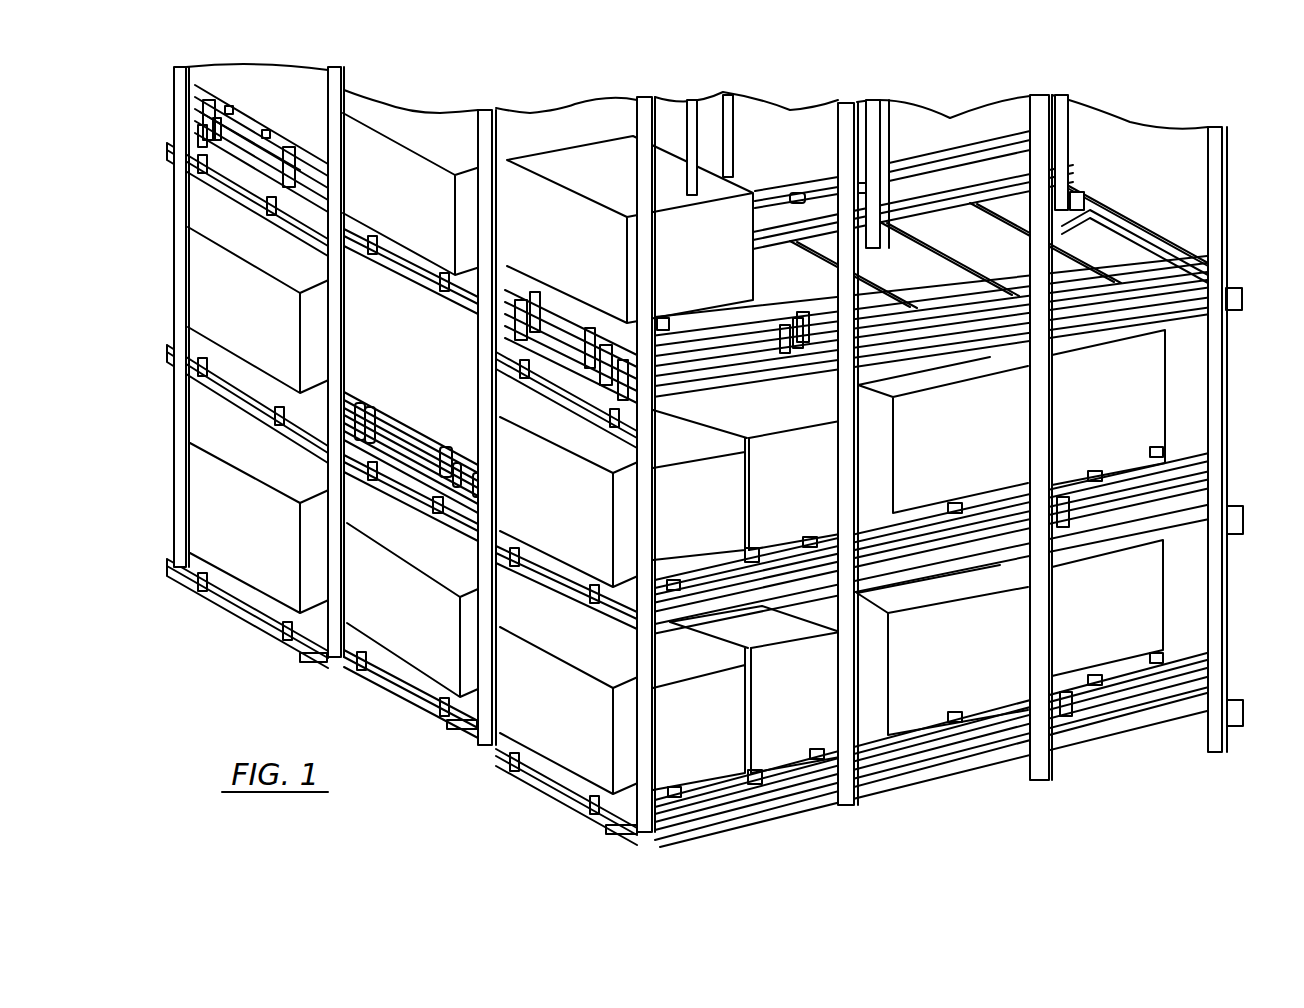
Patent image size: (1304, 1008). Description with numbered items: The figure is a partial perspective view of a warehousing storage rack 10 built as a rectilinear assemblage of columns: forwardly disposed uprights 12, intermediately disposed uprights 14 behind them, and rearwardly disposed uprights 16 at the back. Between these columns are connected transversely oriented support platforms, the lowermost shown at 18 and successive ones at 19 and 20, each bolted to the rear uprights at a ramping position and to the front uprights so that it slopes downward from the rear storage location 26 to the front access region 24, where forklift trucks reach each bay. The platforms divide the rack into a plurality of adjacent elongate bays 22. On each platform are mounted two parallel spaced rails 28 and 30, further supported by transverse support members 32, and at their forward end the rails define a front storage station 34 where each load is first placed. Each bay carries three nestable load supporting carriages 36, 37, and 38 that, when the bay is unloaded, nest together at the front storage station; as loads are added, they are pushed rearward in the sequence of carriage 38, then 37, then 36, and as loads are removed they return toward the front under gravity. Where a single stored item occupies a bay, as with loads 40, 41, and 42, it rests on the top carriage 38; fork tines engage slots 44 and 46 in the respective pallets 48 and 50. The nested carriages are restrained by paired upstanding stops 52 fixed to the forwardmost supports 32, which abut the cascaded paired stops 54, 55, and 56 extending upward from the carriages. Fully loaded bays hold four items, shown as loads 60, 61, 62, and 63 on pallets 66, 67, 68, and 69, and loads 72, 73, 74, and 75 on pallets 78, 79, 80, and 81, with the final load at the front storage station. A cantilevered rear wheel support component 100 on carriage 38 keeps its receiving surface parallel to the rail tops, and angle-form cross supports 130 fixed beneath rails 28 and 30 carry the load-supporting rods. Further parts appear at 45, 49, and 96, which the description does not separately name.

The storage rack 10 is at (1232, 122).
The forwardly disposed upright 12 is at (174, 545).
The intermediately disposed upright 14 is at (735, 140).
The rearwardly disposed upright 16 is at (1068, 140).
The support platform 18 is at (703, 838).
The support platform 19 is at (805, 588).
The support platform 20 is at (758, 390).
The bay 22 is at (258, 256).
The front access region 24 is at (164, 466).
The rear storage location 26 is at (1168, 764).
The rail 28 is at (1020, 190).
The rail 30 is at (1100, 213).
The transverse support member 32 is at (1117, 247).
The front storage station 34 is at (822, 418).
The load supporting carriage 36 is at (196, 138).
The load supporting carriage 37 is at (200, 124).
The load supporting carriage 38 is at (800, 318).
The load 40 is at (712, 215).
The load 41 is at (358, 332).
The load 42 is at (300, 110).
The slot 44 is at (606, 345).
The carriage roller 45 is at (445, 447).
The slot 46 is at (230, 106).
The pallet 48 is at (664, 320).
The carriage roller 49 is at (472, 463).
The pallet 50 is at (262, 130).
The upstanding stop 52 is at (266, 206).
The upstanding stop 54 is at (518, 300).
The upstanding stop 55 is at (623, 360).
The upstanding stop 56 is at (208, 100).
The load 60 is at (690, 676).
The load 61 is at (790, 640).
The load 62 is at (962, 596).
The load 63 is at (1108, 552).
The pallet 66 is at (673, 787).
The pallet 67 is at (818, 749).
The pallet 68 is at (953, 712).
The pallet 69 is at (1095, 675).
The load 72 is at (700, 466).
The load 73 is at (822, 395).
The load 74 is at (958, 378).
The load 75 is at (1110, 345).
The pallet 78 is at (673, 580).
The pallet 79 is at (818, 537).
The pallet 80 is at (955, 503).
The pallet 81 is at (1095, 471).
The stop block 96 is at (1068, 716).
The rear wheel support component 100 is at (815, 334).
The angle-form cross support 130 is at (185, 154).